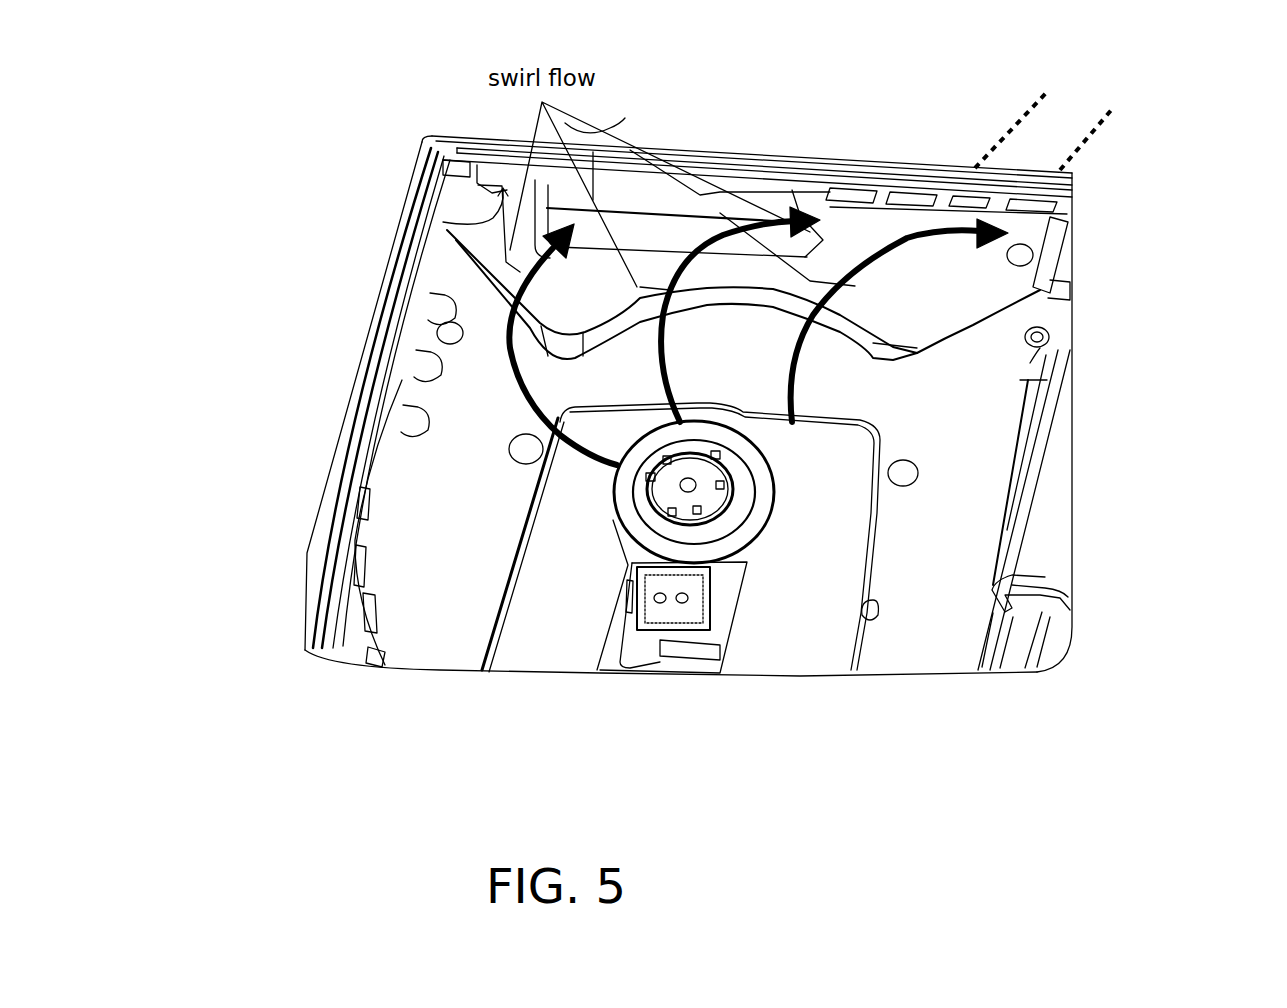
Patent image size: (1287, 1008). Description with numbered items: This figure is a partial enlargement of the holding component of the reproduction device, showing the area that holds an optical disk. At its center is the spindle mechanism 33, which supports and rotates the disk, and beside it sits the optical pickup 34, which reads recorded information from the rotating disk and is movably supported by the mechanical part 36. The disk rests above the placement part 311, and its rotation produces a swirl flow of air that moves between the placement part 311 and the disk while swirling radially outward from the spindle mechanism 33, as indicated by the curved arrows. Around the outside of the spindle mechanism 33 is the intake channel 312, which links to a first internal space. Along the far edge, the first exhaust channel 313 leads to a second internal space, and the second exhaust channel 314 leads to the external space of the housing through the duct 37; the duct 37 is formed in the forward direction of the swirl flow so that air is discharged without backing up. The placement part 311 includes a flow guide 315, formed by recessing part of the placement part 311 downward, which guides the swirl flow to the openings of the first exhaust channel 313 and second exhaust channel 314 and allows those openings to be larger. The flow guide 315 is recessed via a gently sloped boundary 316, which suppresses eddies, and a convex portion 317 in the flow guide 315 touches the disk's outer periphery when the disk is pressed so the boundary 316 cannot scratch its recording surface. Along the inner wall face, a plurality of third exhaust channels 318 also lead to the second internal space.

The placement part 311 is at (958, 435).
The intake channel 312 is at (757, 553).
The first exhaust channel 313 is at (910, 193).
The second exhaust channel 314 is at (428, 166).
The flow guide 315 is at (955, 284).
The boundary 316 is at (478, 262).
The convex portion 317 is at (722, 205).
The third exhaust channels 318 is at (400, 410).
The spindle mechanism 33 is at (660, 498).
The optical pickup 34 is at (632, 613).
The mechanical part 36 is at (789, 633).
The duct 37 is at (1093, 130).